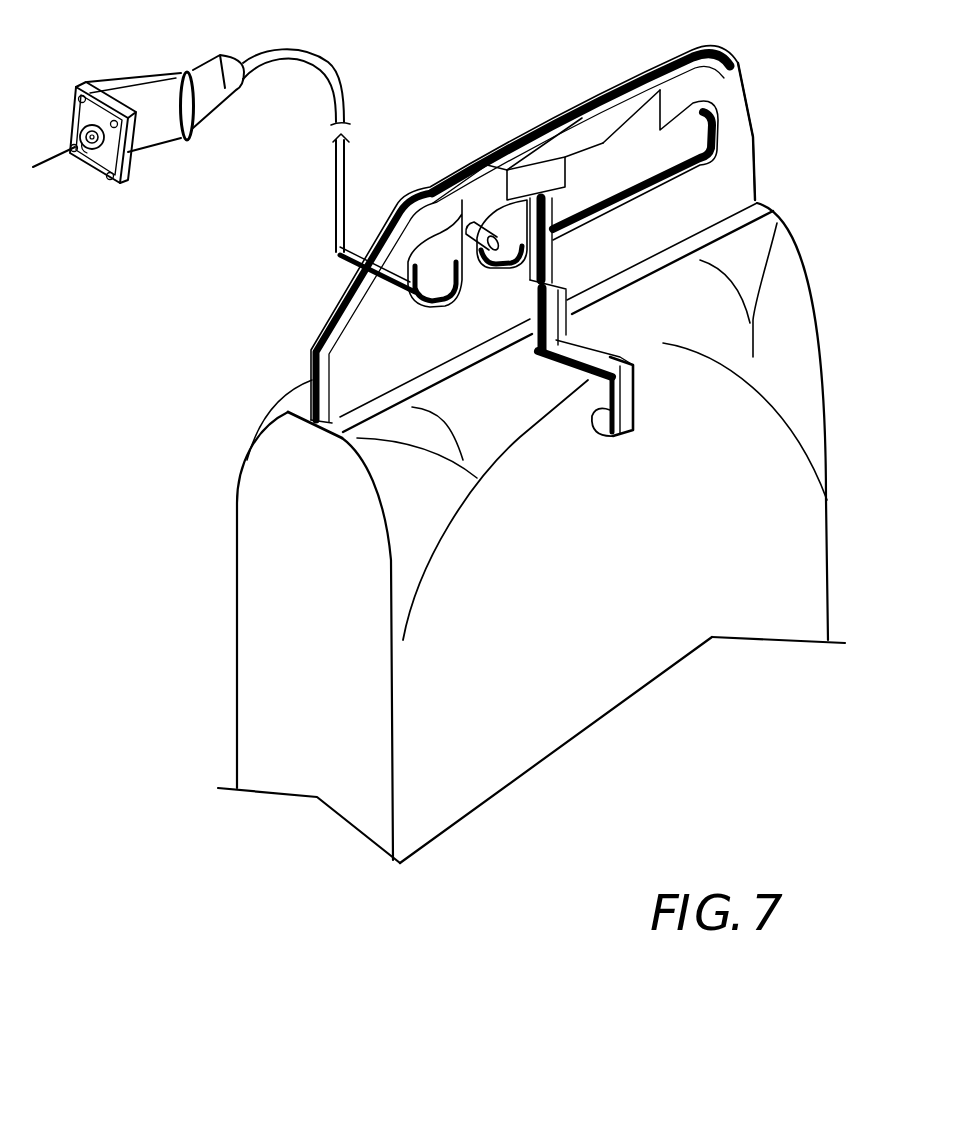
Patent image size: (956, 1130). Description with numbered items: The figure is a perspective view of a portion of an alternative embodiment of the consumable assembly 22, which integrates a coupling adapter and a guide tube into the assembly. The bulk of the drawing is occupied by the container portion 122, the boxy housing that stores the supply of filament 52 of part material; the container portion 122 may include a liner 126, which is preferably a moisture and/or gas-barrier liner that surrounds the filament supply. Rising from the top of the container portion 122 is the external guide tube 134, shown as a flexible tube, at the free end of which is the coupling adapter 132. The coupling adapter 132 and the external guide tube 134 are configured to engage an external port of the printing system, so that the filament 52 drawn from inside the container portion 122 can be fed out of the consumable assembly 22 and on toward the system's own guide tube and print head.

The consumable assembly 22 is at (213, 930).
The filament 52 is at (51, 162).
The container portion 122 is at (200, 621).
The liner 126 is at (573, 560).
The coupling adapter 132 is at (137, 88).
The external guide tube 134 is at (327, 62).